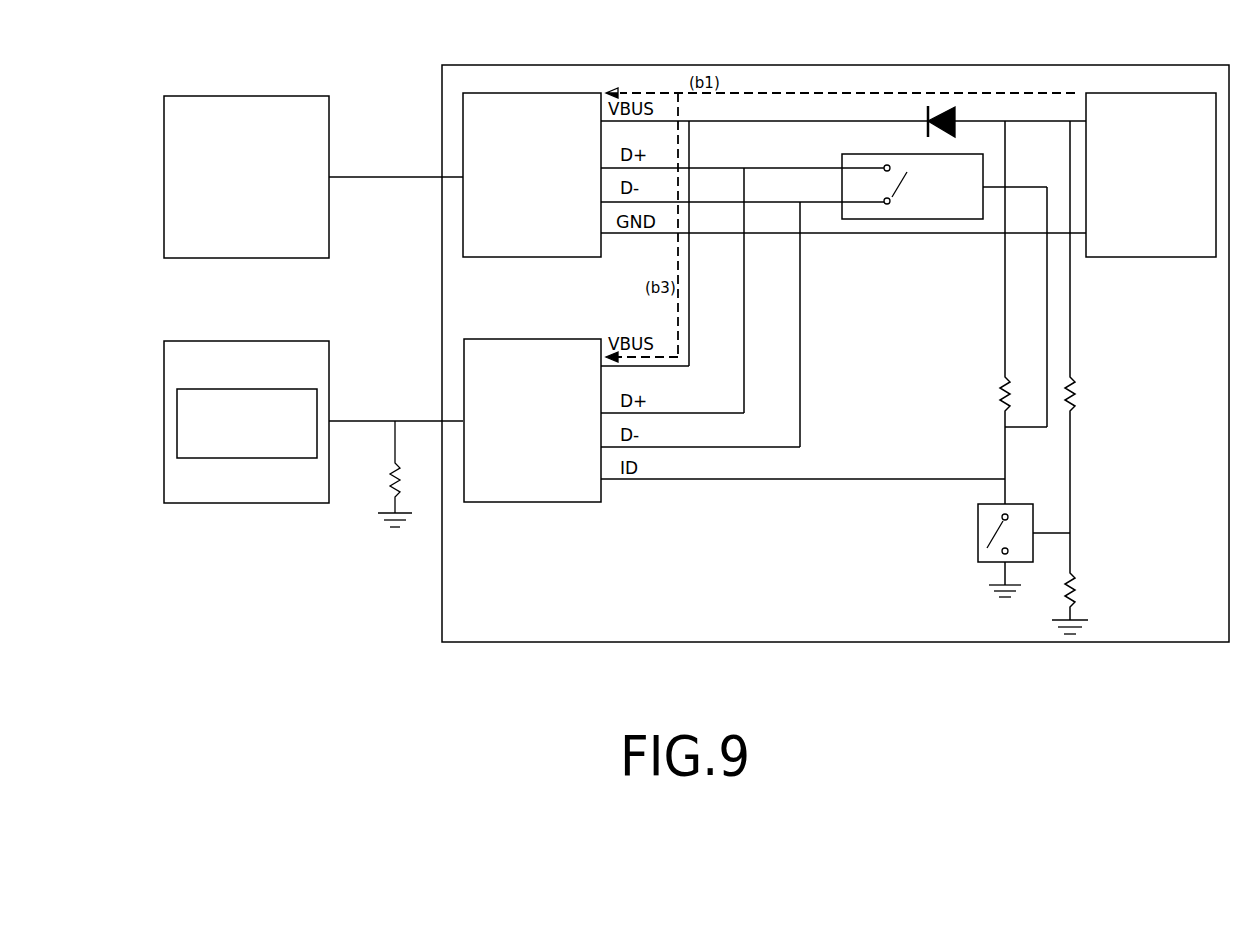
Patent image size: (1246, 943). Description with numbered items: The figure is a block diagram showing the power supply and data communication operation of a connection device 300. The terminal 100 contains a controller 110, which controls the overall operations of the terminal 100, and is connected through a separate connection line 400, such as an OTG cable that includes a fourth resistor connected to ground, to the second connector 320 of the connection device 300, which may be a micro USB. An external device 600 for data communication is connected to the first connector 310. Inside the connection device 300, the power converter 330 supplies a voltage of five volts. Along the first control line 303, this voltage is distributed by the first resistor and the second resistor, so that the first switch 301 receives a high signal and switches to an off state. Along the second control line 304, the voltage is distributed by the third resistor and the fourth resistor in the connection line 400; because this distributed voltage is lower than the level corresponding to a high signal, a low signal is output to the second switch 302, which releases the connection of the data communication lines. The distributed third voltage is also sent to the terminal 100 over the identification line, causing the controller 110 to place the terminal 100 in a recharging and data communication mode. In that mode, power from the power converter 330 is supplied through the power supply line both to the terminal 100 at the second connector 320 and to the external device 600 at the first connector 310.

The terminal 100 is at (250, 504).
The controller 110 is at (250, 388).
The connection device 300 is at (854, 65).
The first switch 301 is at (976, 532).
The second switch 302 is at (912, 220).
The first control line 303 is at (1073, 320).
The second control line 304 is at (1004, 323).
The first connector 310 is at (533, 258).
The second connector 320 is at (533, 503).
The power converter 330 is at (1145, 93).
The connection line 400 is at (372, 420).
The external device 600 is at (247, 95).